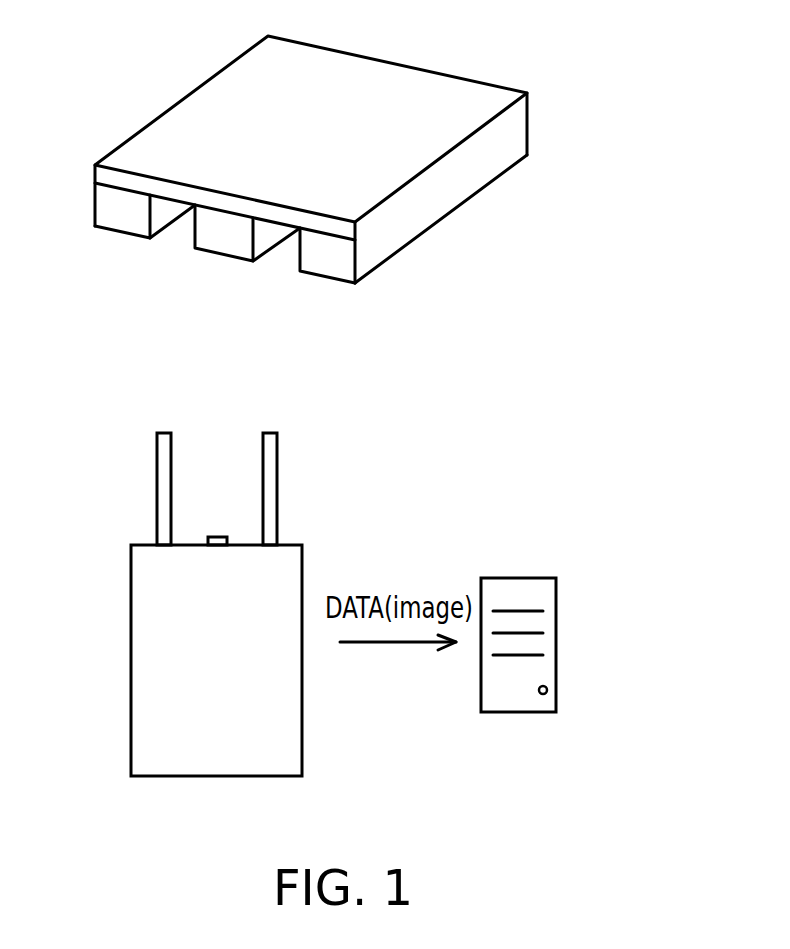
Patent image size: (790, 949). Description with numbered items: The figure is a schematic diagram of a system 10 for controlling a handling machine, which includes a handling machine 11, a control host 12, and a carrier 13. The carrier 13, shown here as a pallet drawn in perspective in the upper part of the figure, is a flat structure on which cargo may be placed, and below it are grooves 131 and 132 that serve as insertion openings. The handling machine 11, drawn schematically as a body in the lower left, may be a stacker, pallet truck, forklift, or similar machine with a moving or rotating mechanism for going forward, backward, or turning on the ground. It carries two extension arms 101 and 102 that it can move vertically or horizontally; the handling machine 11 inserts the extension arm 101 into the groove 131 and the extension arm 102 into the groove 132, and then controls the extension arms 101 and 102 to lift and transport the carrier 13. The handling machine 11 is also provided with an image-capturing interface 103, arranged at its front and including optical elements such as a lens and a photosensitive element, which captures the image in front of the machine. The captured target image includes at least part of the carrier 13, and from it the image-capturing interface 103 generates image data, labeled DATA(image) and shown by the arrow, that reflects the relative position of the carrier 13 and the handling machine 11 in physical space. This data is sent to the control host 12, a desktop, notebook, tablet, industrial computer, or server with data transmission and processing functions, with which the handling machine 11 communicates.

The system 10 is at (597, 825).
The handling machine 11 is at (148, 657).
The control host 12 is at (519, 578).
The carrier 13 is at (383, 78).
The extension arm 101 is at (162, 490).
The extension arm 102 is at (272, 488).
The image-capturing interface 103 is at (217, 537).
The groove 131 is at (182, 227).
The groove 132 is at (285, 253).